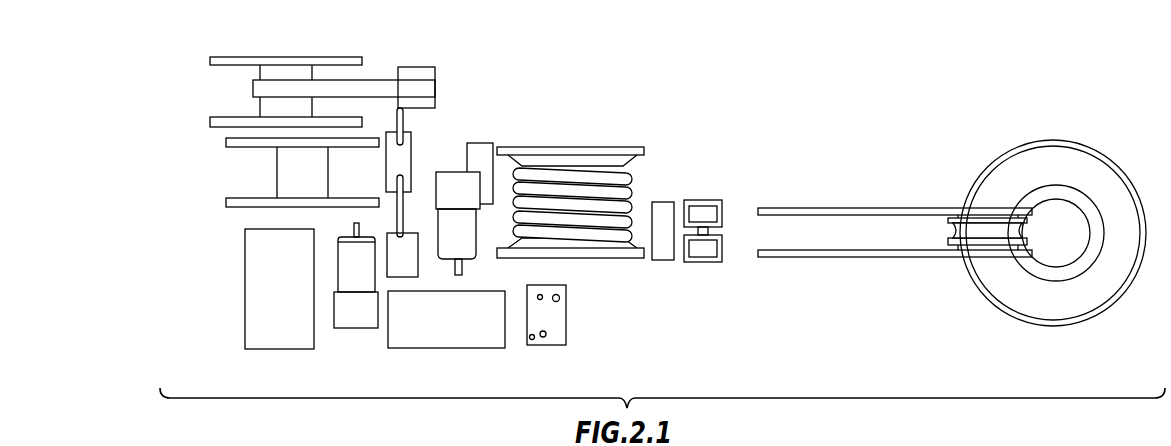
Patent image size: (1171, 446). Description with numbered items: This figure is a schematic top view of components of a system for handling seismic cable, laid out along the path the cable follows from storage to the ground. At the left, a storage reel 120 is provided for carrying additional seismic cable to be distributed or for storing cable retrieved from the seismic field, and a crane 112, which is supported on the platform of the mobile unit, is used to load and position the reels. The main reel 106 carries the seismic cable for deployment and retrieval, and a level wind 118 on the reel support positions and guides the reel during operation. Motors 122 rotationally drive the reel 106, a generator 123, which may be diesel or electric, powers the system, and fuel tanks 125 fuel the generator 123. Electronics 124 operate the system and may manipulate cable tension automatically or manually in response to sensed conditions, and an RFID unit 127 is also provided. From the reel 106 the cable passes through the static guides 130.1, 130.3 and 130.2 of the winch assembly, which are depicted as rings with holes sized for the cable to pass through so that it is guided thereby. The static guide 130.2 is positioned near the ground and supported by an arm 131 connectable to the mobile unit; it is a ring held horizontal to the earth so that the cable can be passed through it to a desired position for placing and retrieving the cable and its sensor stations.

The reel 106 is at (613, 147).
The crane 112 is at (372, 80).
The level wind 118 is at (411, 145).
The storage reel 120 is at (216, 66).
The motors 122 is at (470, 265).
The generator 123 is at (243, 241).
The electronics 124 is at (437, 348).
The fuel tanks 125 is at (567, 315).
The RFID unit 127 is at (708, 265).
The static guide 130.1 is at (478, 145).
The static guide 130.2 is at (1017, 143).
The static guide 130.3 is at (667, 202).
The arm 131 is at (880, 258).